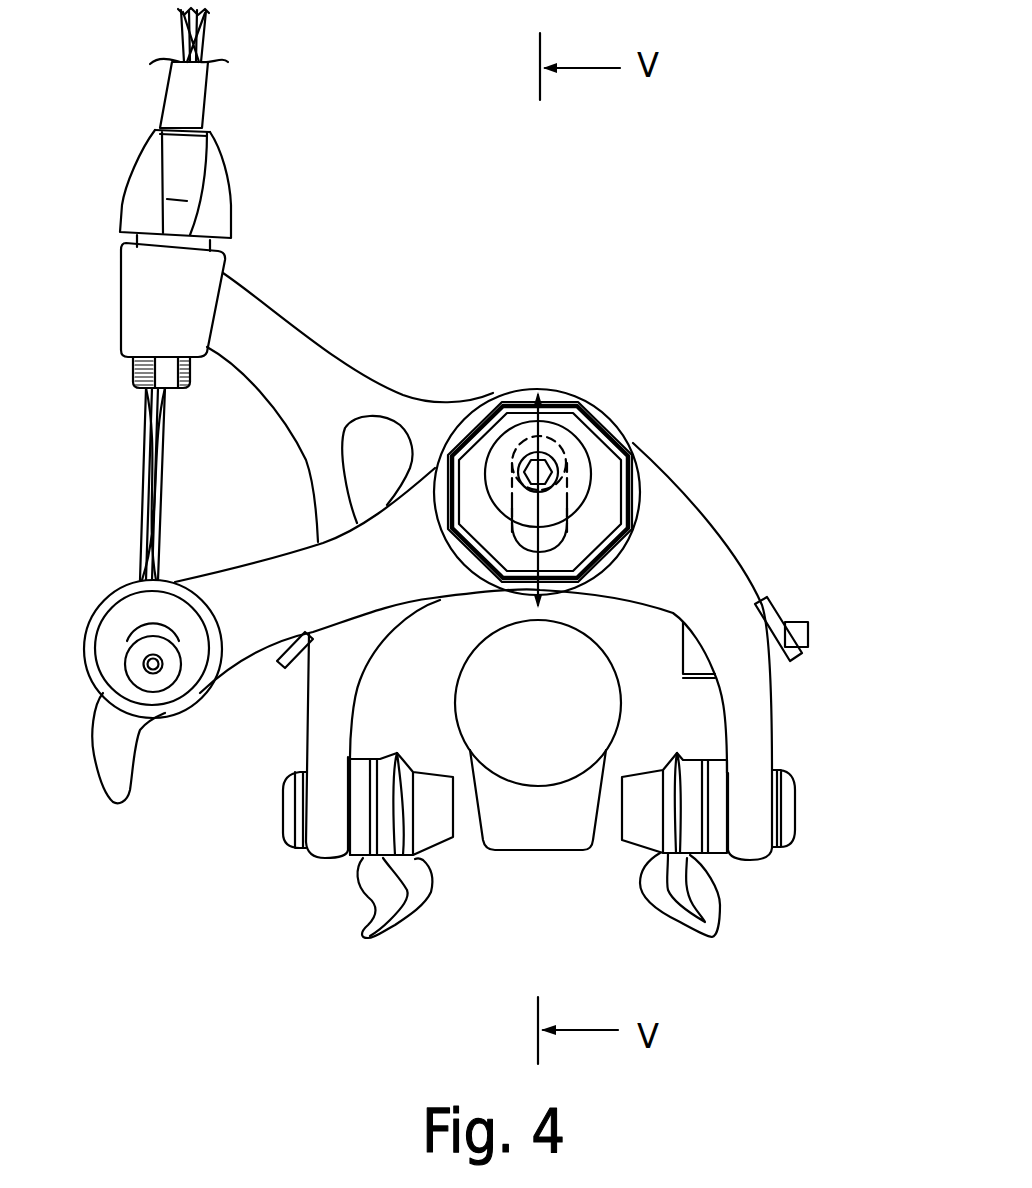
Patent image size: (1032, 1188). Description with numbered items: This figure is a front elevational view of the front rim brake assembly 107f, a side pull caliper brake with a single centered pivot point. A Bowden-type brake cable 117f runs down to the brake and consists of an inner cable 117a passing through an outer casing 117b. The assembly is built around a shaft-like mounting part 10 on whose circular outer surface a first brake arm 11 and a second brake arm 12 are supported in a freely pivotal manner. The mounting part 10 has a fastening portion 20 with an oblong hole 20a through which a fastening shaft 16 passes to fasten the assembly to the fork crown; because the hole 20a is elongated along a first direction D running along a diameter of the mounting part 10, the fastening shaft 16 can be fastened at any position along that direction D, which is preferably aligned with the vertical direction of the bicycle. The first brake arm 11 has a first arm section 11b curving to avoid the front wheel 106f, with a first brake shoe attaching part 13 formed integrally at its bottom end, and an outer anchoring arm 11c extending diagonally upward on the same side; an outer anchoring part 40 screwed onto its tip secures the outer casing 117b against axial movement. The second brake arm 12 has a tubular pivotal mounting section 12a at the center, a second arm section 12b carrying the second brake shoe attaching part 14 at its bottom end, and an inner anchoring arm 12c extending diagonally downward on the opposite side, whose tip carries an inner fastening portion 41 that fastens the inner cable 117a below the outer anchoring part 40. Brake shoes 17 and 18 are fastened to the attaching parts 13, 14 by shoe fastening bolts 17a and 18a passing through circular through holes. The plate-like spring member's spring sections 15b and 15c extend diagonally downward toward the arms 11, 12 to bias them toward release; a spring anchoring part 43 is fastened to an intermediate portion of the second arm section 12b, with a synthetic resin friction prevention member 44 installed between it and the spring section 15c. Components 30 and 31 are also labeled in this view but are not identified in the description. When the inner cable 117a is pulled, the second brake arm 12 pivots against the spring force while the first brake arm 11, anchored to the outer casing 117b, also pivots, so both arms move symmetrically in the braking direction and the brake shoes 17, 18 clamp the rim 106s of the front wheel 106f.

The inner cable 117a is at (207, 35).
The outer casing 117b is at (202, 109).
The Bowden-type brake cable 117f is at (326, 24).
The outer anchoring part 40 is at (218, 188).
The inner fastening portion 41 is at (108, 640).
The first brake arm 11 is at (300, 735).
The first arm section 11b is at (320, 681).
The outer anchoring arm 11c is at (328, 358).
The second brake arm 12 is at (735, 503).
The tubular pivotal mounting section 12a is at (539, 390).
The second arm section 12b is at (715, 553).
The inner anchoring arm 12c is at (243, 568).
The first brake shoe attaching part 13 is at (320, 807).
The second brake shoe attaching part 14 is at (773, 767).
The spring section 15b is at (300, 651).
The spring section 15c is at (768, 622).
The fastening shaft 16 is at (504, 458).
The brake shoe 17 is at (360, 896).
The shoe fastening bolt 17a is at (283, 832).
The brake shoe 18 is at (725, 918).
The shoe fastening bolt 18a is at (798, 813).
The fastening portion 20 is at (531, 538).
The oblong hole 20a is at (562, 533).
The spring cover 30 is at (598, 437).
The octagonal adjusting member 31 is at (558, 408).
The mounting part 10 is at (602, 465).
The spring anchoring part 43 is at (798, 622).
The friction prevention member 44 is at (690, 660).
The front wheel 106f is at (622, 726).
The rim 106s is at (604, 848).
The front rim brake assembly 107f is at (639, 327).
The first direction D is at (603, 560).